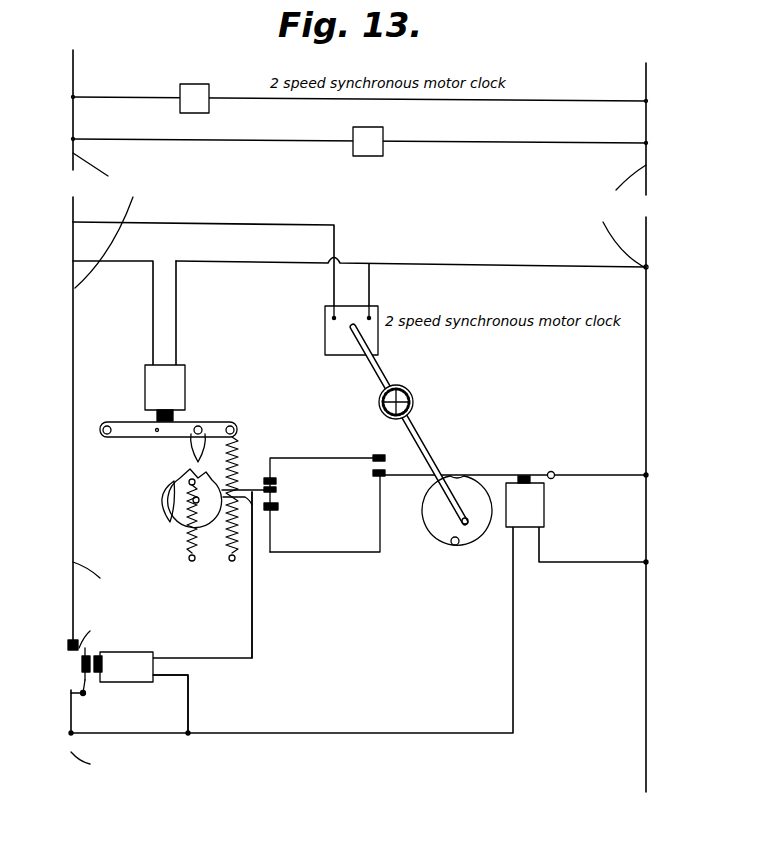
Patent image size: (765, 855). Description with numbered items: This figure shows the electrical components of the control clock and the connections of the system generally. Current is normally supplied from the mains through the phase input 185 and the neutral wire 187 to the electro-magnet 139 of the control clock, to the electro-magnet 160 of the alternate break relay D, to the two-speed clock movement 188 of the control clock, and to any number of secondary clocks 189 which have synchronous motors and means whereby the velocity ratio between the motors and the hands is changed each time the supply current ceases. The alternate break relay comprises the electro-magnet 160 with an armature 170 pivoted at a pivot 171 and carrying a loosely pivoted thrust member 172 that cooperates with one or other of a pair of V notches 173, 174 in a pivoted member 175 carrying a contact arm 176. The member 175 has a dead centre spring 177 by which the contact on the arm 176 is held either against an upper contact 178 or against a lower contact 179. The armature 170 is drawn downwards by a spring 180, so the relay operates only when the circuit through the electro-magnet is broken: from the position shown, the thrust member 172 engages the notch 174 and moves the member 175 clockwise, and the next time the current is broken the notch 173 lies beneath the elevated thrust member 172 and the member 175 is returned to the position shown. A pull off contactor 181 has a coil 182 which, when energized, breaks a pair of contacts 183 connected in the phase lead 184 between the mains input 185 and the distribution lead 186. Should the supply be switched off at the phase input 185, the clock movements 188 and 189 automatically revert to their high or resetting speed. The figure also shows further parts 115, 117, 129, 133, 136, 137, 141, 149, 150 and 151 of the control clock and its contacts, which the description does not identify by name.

The secondary clocks 189 is at (200, 95).
The distribution lead 186 is at (112, 220).
The neutral wire 187 is at (611, 216).
The two-speed clock movement 188 is at (343, 313).
The electro-magnet 160 is at (153, 380).
The pivot 171 is at (125, 440).
The armature 170 is at (157, 433).
The thrust member 172 is at (203, 428).
The spring 180 is at (238, 457).
The V notch 174 is at (240, 472).
The V notch 173 is at (175, 510).
The pivoted member 175 is at (190, 533).
The dead centre spring 177 is at (205, 549).
The contact arm 176 is at (253, 540).
The contact arm 149 is at (375, 474).
The upper contact 178 is at (278, 485).
The lower contact 179 is at (280, 512).
The contact 151 is at (386, 460).
The contact 150 is at (383, 480).
The arm 136 is at (470, 540).
The gear wheel 115 is at (401, 390).
The ratchet 117 is at (414, 402).
The disc 133 is at (447, 546).
The notch 141 is at (460, 473).
The pin 129 is at (437, 546).
The contact 137 is at (520, 475).
The electro-magnet 139 is at (538, 506).
The phase lead 184 is at (112, 581).
The pair of contacts 183 is at (104, 640).
The pull off contactor 181 is at (87, 683).
The coil 182 is at (206, 700).
The mains input 185 is at (105, 770).